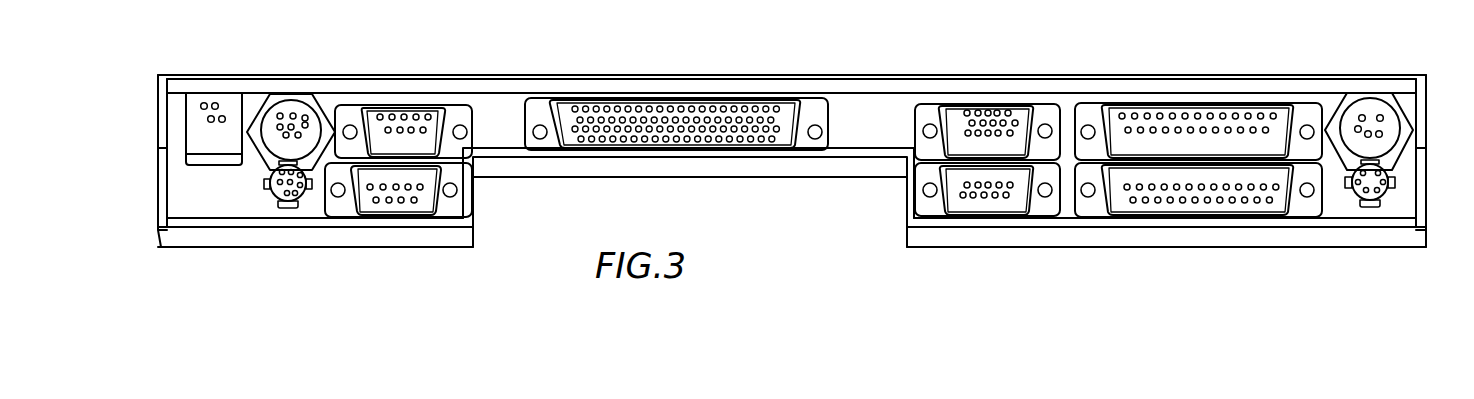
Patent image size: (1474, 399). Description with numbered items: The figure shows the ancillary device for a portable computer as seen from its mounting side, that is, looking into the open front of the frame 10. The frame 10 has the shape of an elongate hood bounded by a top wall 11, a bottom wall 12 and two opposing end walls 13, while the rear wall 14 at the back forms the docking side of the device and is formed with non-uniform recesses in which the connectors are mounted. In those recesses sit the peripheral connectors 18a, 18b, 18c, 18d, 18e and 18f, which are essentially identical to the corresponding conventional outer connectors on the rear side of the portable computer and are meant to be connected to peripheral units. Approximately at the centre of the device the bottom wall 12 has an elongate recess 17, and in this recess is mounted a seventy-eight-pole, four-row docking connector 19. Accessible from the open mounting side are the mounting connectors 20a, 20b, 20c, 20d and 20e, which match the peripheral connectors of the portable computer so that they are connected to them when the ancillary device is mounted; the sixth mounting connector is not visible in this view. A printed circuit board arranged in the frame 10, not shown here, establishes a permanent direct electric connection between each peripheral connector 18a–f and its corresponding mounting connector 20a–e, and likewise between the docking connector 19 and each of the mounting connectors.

The frame 10 is at (495, 69).
The top wall 11 is at (872, 87).
The bottom wall 12 is at (225, 240).
The end walls 13 is at (158, 178).
The rear wall 14 is at (899, 98).
The elongate recess 17 is at (906, 202).
The peripheral connector 18a is at (1367, 93).
The peripheral connector 18b is at (1188, 103).
The peripheral connector 18c is at (988, 104).
The peripheral connector 18d is at (412, 105).
The peripheral connector 18e is at (297, 94).
The peripheral connector 18f is at (207, 93).
The docking connector 19 is at (650, 98).
The mounting connector 20a is at (1350, 215).
The mounting connector 20b is at (1205, 216).
The mounting connector 20c is at (986, 216).
The mounting connector 20d is at (408, 215).
The mounting connector 20e is at (305, 207).